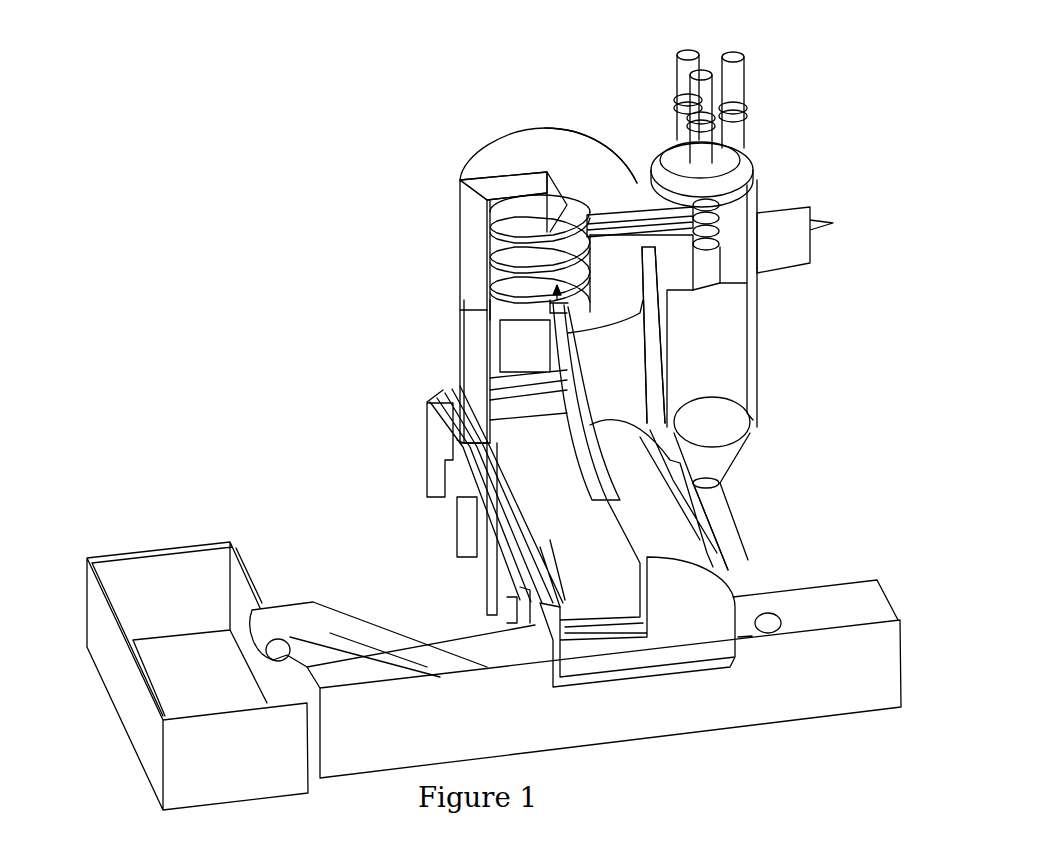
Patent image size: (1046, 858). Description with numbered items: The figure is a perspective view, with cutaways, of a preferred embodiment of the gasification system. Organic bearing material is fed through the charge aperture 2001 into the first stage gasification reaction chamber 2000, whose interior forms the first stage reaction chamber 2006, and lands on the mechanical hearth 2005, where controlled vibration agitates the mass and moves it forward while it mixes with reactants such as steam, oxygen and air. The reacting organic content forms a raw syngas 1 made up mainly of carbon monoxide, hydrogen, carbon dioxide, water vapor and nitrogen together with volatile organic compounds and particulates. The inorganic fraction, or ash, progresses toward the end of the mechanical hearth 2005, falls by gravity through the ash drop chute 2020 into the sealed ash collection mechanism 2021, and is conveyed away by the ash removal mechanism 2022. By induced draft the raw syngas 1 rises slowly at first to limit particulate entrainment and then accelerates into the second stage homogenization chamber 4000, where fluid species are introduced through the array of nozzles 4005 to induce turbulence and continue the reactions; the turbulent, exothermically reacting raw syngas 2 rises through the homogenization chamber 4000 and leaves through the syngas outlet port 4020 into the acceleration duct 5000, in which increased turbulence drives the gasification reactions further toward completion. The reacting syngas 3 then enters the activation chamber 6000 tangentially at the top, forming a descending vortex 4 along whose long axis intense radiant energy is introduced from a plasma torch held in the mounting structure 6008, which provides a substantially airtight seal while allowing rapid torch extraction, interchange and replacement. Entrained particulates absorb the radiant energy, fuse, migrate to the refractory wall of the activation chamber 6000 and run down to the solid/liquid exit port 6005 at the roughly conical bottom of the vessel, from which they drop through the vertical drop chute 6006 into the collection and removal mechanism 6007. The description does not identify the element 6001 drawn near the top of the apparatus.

The raw syngas 1 is at (569, 493).
The reacting raw syngas 2 is at (490, 258).
The reacting syngas 3 is at (556, 183).
The descending vortex 4 is at (787, 217).
The first stage gasification reaction chamber 2000 is at (457, 401).
The charge aperture 2001 is at (416, 371).
The mechanical hearth 2005 is at (471, 496).
The first stage reaction chamber 2006 is at (757, 567).
The ash drop chute 2020 is at (576, 639).
The ash collection mechanism 2021 is at (604, 679).
The ash removal mechanism 2022 is at (368, 599).
The second stage homogenization chamber 4000 is at (440, 397).
The nozzles 4005 is at (384, 307).
The syngas outlet port 4020 is at (465, 190).
The acceleration duct 5000 is at (640, 187).
The activation chamber 6000 is at (726, 303).
The arch 6001 is at (638, 185).
The solid/liquid exit port 6005 is at (742, 335).
The vertical drop chute 6006 is at (757, 385).
The collection and removal mechanism 6007 is at (801, 460).
The mounting structure 6008 is at (740, 148).